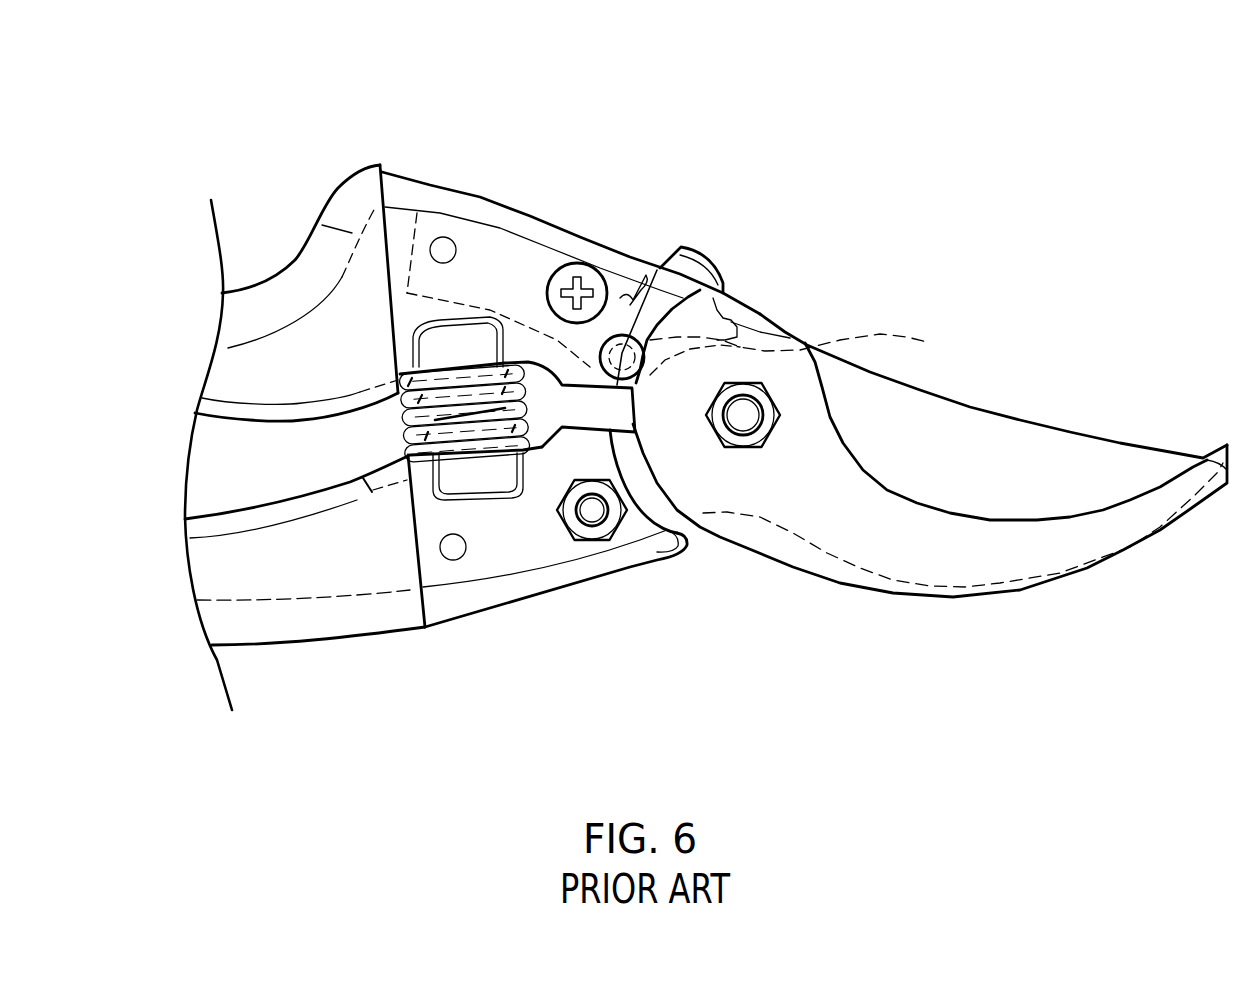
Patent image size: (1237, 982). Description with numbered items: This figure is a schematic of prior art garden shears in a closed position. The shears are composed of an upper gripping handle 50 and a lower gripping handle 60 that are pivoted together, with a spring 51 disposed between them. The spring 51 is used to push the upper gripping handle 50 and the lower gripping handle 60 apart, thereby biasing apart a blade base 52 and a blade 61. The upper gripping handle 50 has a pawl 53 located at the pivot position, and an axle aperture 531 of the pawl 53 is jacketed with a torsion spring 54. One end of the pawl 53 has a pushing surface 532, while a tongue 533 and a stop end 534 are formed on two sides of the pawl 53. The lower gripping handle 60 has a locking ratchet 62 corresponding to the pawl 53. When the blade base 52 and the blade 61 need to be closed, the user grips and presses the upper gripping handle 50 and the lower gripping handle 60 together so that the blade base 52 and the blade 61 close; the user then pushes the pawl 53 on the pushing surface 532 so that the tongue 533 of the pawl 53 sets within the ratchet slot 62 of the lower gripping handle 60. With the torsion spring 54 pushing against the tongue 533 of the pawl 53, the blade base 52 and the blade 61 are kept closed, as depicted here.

The upper gripping handle 50 is at (346, 174).
The spring 51 is at (440, 420).
The blade base 52 is at (933, 590).
The pawl 53 is at (733, 293).
The axle aperture 531 is at (627, 303).
The pushing surface 532 is at (703, 256).
The tongue 533 is at (740, 305).
The stop end 534 is at (646, 272).
The torsion spring 54 is at (640, 375).
The lower gripping handle 60 is at (353, 639).
The blade 61 is at (993, 430).
The locking ratchet 62 is at (805, 351).